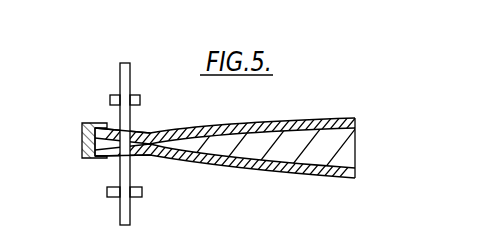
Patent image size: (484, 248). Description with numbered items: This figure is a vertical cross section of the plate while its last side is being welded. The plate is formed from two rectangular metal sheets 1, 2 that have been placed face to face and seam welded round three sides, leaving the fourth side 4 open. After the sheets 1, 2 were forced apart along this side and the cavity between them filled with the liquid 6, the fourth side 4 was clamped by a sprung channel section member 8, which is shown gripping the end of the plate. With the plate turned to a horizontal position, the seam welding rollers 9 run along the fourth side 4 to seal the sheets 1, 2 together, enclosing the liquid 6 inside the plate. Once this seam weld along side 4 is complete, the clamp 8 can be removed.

The metal sheet 1 is at (352, 120).
The metal sheet 2 is at (355, 178).
The liquid 6 is at (348, 155).
The sprung channel section member 8 is at (82, 142).
The fourth side 4 is at (103, 153).
The seam welding rollers 9 is at (123, 85).